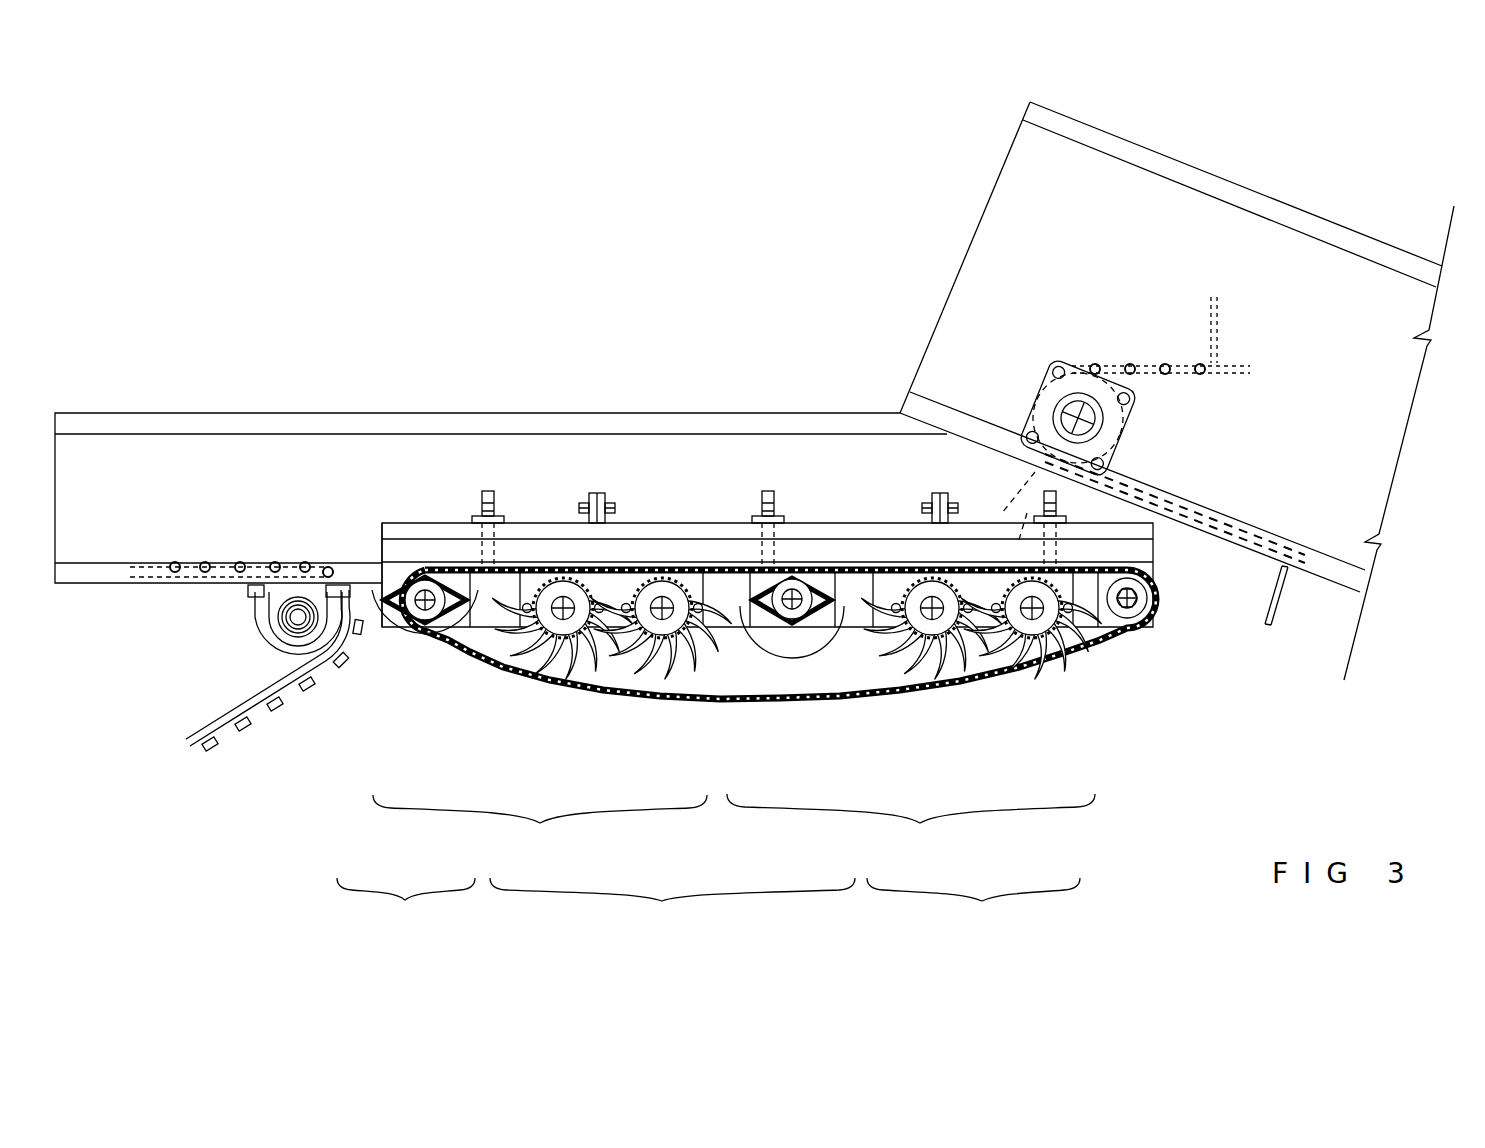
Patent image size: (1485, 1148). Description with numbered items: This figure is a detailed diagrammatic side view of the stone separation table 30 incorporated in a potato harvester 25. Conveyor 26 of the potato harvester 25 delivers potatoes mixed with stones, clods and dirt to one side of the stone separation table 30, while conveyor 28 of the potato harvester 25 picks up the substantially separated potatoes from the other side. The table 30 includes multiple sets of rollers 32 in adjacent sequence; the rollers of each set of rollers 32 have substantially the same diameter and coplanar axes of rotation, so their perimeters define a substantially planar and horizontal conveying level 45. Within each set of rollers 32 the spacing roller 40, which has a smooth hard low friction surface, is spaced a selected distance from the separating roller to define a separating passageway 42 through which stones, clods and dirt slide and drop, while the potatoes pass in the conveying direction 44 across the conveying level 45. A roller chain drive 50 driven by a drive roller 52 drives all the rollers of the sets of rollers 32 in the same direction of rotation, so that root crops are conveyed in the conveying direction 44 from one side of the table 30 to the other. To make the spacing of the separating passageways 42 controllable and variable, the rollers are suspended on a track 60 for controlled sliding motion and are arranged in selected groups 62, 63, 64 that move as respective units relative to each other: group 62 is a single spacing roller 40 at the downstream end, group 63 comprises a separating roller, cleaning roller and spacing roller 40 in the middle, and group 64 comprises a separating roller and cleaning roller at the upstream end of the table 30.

The potato harvester 25 is at (258, 720).
The conveyor 26 is at (1163, 364).
The conveyor 28 is at (242, 560).
The stone separation table 30 is at (710, 499).
The set of rollers 32 is at (734, 830).
The spacing roller 40 is at (432, 660).
The separating passageway 42 is at (500, 654).
The conveying direction 44 is at (556, 292).
The conveying level 45 is at (582, 455).
The roller chain drive 50 is at (781, 556).
The drive roller 52 is at (1132, 614).
The track 60 is at (366, 532).
The group 62 is at (406, 911).
The group 63 is at (672, 911).
The group 64 is at (973, 912).